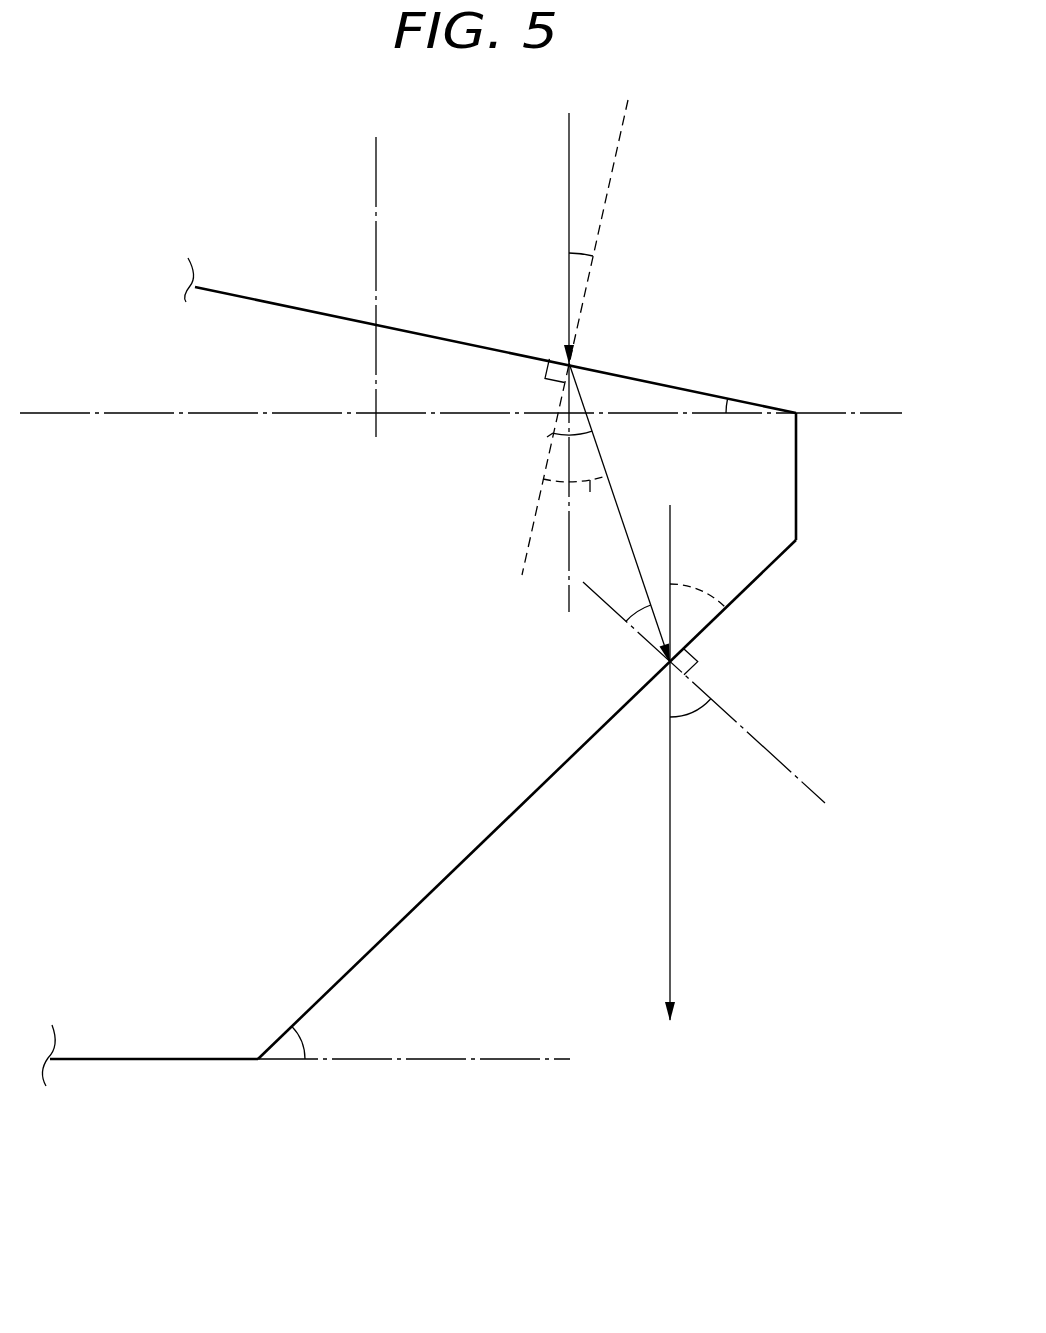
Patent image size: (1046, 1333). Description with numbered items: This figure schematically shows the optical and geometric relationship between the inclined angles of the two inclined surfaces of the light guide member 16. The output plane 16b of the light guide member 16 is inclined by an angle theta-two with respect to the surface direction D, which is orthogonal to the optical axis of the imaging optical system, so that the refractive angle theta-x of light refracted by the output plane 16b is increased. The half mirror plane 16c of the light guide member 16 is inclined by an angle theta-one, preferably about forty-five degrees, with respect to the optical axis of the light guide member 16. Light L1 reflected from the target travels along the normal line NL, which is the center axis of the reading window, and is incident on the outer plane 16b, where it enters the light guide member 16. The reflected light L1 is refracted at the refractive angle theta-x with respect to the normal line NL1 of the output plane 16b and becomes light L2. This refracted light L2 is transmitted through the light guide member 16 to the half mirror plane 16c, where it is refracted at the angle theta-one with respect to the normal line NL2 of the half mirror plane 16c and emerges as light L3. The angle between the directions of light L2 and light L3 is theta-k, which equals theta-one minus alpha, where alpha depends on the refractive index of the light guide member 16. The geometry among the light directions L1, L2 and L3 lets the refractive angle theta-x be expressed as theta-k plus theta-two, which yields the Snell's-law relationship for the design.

The light guide member 16 is at (171, 1058).
The output plane 16b is at (318, 308).
The half mirror plane 16c is at (458, 868).
The surface direction D is at (851, 413).
The normal line NL is at (376, 170).
The normal line of the output plane NL1 is at (620, 148).
The normal line of the half mirror plane NL2 is at (780, 757).
The reflected light L1 is at (568, 148).
The refracted light L2 is at (600, 448).
The light L3 is at (670, 895).